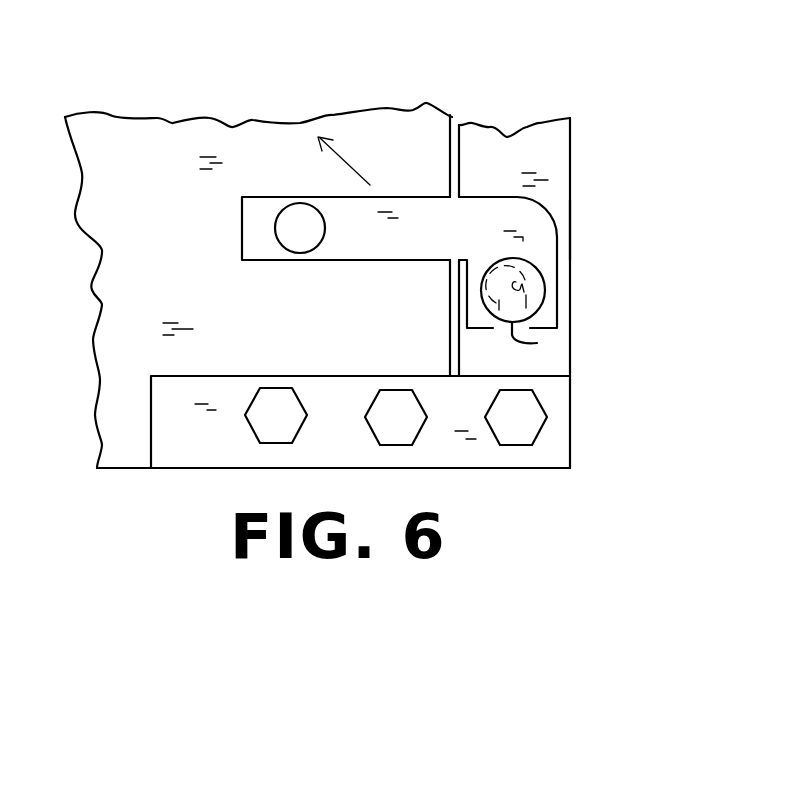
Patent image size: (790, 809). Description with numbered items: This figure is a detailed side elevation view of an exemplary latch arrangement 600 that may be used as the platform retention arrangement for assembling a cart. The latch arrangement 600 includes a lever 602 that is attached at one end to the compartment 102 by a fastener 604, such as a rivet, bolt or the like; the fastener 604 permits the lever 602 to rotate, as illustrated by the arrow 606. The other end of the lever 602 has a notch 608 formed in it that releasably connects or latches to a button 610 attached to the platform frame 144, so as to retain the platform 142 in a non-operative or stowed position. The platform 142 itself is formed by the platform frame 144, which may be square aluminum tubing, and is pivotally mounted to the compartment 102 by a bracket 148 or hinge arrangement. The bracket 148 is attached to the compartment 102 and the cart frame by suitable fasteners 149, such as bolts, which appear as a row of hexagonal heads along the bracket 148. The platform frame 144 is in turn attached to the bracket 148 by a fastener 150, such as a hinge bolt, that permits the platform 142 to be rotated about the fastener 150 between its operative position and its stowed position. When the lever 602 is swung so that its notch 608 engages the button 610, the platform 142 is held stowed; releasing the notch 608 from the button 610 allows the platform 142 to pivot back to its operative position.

The latch arrangement 600 is at (478, 93).
The compartment 102 is at (177, 223).
The platform 142 is at (579, 181).
The platform frame 144 is at (572, 228).
The arrow 606 is at (362, 170).
The lever 602 is at (400, 250).
The fastener 604 is at (275, 243).
The notch 608 is at (537, 282).
The button 610 is at (537, 343).
The bracket 148 is at (530, 468).
The fasteners 149 is at (374, 396).
The fastener 150 is at (547, 416).